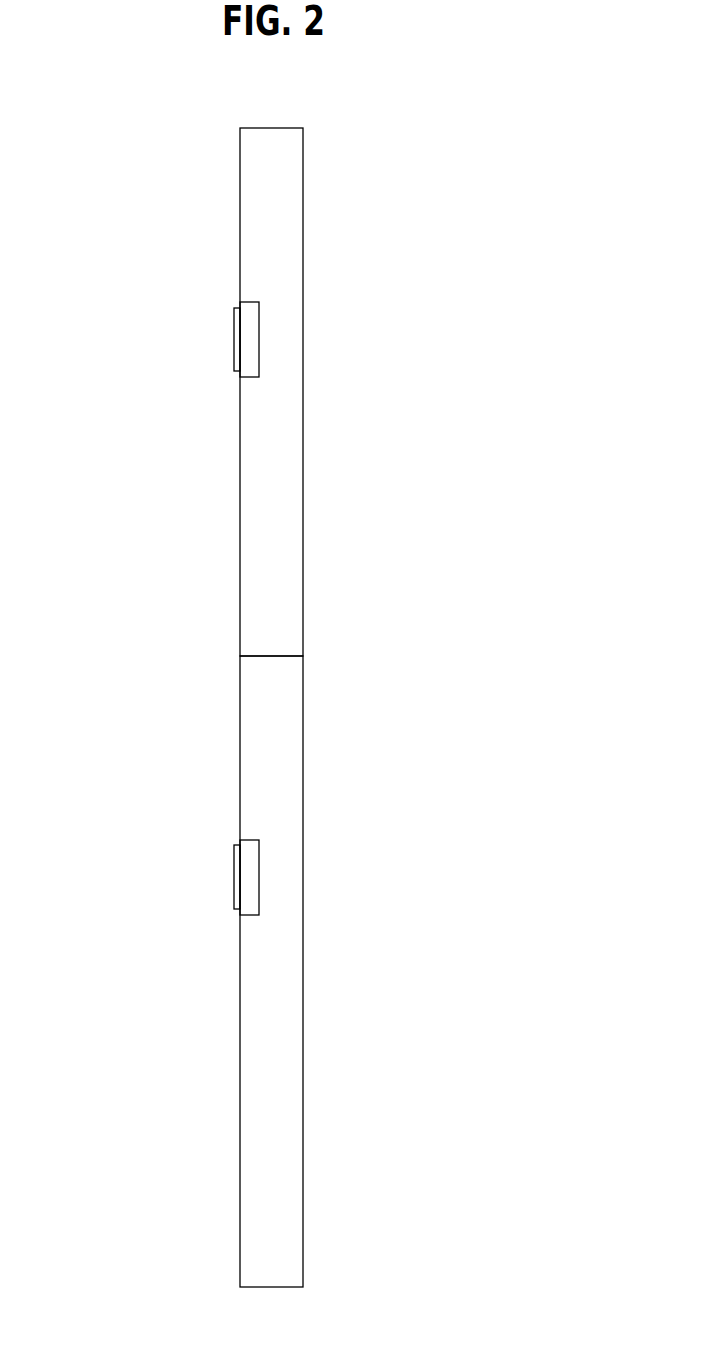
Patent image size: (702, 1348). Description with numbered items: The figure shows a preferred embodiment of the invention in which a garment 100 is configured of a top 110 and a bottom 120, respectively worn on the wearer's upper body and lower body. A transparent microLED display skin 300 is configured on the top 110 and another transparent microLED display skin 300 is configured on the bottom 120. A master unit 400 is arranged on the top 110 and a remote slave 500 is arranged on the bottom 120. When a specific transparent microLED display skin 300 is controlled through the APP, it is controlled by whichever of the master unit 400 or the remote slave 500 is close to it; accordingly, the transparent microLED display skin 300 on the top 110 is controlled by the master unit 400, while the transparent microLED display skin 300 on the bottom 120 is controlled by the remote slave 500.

The garment 100 is at (406, 707).
The top 110 is at (286, 452).
The bottom 120 is at (360, 971).
The transparent microLED display skin 300 is at (237, 352).
The master unit 400 is at (253, 335).
The remote slave 500 is at (253, 889).